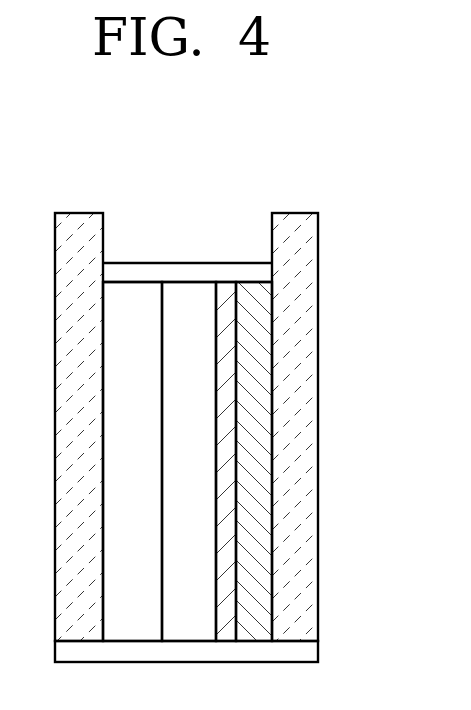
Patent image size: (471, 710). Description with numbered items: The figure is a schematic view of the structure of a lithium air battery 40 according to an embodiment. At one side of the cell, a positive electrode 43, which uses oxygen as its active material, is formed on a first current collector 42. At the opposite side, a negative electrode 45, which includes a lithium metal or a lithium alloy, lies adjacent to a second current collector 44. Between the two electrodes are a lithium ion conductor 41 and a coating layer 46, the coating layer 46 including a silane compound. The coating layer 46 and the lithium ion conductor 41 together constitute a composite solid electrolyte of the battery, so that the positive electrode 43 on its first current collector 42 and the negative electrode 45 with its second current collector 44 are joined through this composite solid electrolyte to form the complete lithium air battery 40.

The lithium air battery 40 is at (358, 198).
The lithium ion conductor 41 is at (187, 293).
The first current collector 42 is at (77, 227).
The positive electrode 43 is at (128, 295).
The second current collector 44 is at (296, 227).
The negative electrode 45 is at (254, 293).
The coating layer 46 is at (225, 293).